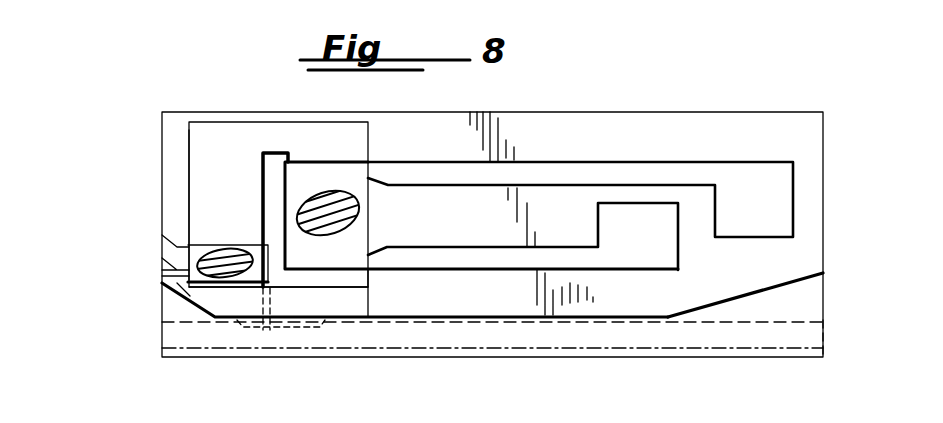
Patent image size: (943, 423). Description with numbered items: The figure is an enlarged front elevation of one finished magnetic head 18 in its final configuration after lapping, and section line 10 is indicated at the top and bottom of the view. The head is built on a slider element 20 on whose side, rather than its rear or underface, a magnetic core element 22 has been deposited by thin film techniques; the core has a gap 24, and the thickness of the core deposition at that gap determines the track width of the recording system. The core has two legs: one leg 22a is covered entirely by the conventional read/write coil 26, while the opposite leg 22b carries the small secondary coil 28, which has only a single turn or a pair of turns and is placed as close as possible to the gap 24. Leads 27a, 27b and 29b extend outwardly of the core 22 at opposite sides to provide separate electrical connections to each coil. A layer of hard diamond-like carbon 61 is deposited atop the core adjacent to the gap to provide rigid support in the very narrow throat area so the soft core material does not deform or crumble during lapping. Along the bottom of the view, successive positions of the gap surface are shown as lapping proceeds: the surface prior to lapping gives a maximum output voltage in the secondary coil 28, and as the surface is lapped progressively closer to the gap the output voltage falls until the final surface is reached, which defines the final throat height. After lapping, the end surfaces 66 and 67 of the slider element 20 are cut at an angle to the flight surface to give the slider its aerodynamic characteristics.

The section line 10- 10 is at (150, 53).
The magnetic head 18 is at (678, 96).
The slider element 20 is at (560, 112).
The magnetic core element 22 is at (213, 128).
The leg of the core 22a is at (352, 278).
The opposite leg of the core 22b is at (198, 160).
The gap 24 is at (266, 323).
The read/write coil 26 is at (354, 176).
The lead 27a is at (620, 212).
The lead 27b is at (760, 182).
The secondary coil 28 is at (258, 246).
The lead 29b is at (81, 204).
The diamond-like carbon layer 61 is at (340, 308).
The end surface 66 is at (795, 284).
The end surface 67 is at (176, 290).